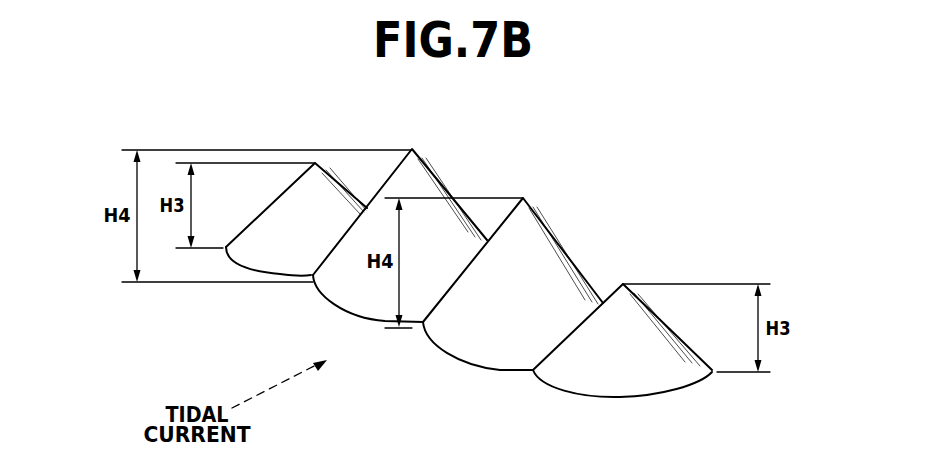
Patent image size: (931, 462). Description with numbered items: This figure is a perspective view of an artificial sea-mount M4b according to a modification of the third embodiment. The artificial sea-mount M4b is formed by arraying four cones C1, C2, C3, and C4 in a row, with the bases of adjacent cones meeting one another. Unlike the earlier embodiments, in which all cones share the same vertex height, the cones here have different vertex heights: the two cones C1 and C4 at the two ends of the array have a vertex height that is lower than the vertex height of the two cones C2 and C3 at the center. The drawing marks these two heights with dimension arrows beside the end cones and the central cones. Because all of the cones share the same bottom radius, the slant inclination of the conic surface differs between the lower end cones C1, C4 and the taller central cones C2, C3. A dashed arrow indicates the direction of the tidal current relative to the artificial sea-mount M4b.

The cone C1 is at (272, 203).
The cone C2 is at (435, 174).
The cone C3 is at (548, 228).
The cone C4 is at (675, 330).
The artificial sea-mount M4b is at (471, 244).